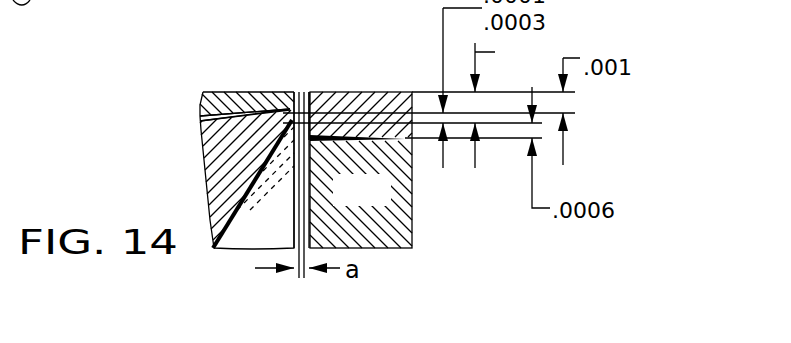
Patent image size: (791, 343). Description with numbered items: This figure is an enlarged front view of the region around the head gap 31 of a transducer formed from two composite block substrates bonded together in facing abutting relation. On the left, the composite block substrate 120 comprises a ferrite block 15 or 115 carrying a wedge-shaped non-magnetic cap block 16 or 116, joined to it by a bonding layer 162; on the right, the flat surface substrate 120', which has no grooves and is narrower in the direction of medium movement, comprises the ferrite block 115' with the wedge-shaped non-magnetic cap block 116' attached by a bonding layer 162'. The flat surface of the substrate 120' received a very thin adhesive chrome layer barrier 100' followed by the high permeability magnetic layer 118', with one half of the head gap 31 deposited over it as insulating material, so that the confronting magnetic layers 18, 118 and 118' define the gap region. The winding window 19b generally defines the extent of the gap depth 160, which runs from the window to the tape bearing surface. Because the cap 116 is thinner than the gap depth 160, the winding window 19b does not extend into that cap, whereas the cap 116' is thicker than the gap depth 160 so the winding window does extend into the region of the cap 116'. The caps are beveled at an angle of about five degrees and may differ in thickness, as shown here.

The non-magnetic cap block 16 is at (200, 98).
The wedge-shaped non-magnetic cap block 116 is at (188, 60).
The magnetic layer 18 is at (233, 146).
The magnetic layer 118 is at (233, 146).
The head gap 31 is at (299, 92).
The high permeability magnetic layer 118' is at (348, 81).
The wedge-shaped non-magnetic cap block 116' is at (361, 96).
The bonding layer 162 is at (206, 123).
The composite block substrate 120 is at (194, 170).
The ferrite block 15 is at (186, 179).
The ferrite block 115 is at (186, 179).
The winding window 19b is at (289, 182).
The ferrite block 115' is at (361, 194).
The bonding layer 162' is at (400, 172).
The flat surface substrate 120' is at (419, 172).
The gap depth 160 is at (504, 105).
The adhesive chrome layer barrier 100' is at (79, 12).